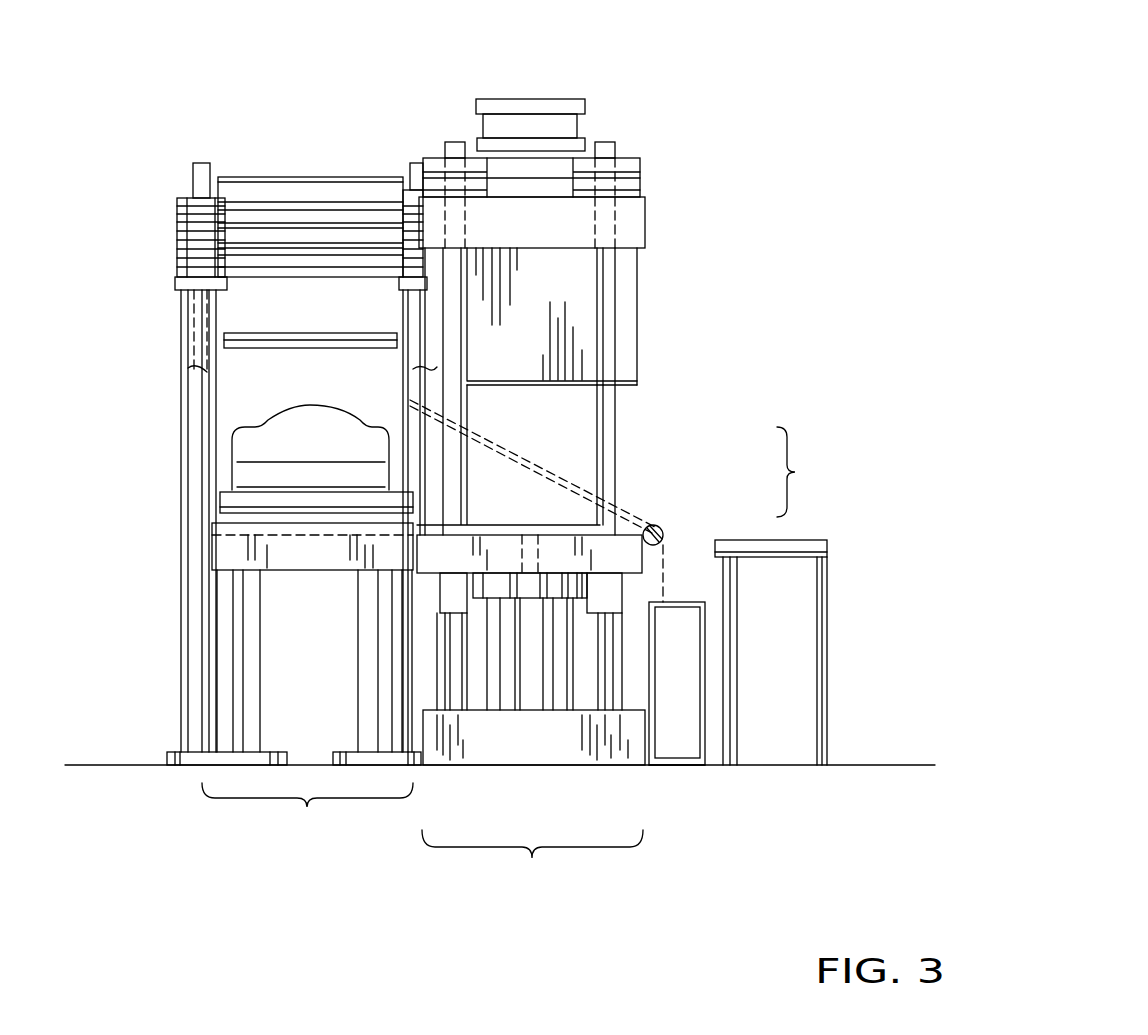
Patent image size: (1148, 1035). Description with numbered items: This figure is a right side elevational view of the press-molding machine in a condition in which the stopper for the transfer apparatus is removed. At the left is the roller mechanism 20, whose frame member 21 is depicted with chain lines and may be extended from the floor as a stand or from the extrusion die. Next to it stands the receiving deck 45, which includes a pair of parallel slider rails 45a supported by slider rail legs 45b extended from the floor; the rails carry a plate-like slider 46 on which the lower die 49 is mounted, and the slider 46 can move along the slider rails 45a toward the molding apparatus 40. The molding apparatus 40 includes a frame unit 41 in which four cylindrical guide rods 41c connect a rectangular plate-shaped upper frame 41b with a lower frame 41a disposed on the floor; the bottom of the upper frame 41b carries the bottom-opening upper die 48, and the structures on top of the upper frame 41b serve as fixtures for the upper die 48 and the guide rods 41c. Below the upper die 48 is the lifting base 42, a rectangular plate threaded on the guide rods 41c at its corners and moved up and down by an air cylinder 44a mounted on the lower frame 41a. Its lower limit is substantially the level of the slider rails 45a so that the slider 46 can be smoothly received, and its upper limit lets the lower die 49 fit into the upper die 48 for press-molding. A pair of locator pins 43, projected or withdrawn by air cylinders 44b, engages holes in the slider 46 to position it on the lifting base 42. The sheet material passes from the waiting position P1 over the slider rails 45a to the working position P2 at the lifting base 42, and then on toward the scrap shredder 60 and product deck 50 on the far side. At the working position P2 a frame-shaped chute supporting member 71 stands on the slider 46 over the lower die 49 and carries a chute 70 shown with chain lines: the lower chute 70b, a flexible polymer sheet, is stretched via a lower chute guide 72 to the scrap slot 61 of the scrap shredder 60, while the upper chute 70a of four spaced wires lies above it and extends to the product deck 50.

The roller mechanism 20 is at (307, 130).
The frame member 21 is at (196, 345).
The molding apparatus 40 is at (664, 173).
The frame unit 41 is at (632, 224).
The lower frame 41a is at (620, 748).
The upper frame 41b is at (528, 391).
The guide rods 41c is at (457, 403).
The lifting base 42 is at (625, 558).
The locator pins 43 is at (516, 530).
The air cylinder 44a is at (507, 682).
The air cylinders 44b is at (525, 690).
The receiving deck 45 is at (194, 627).
The slider rails 45a is at (238, 550).
The slider rail legs 45b is at (378, 648).
The slider 46 is at (240, 505).
The upper die 48 is at (625, 338).
The lower die 49 is at (270, 447).
The product deck 50 is at (780, 538).
The scrap shredder 60 is at (682, 717).
The scrap slot 61 is at (678, 643).
The chute 70 is at (803, 472).
The upper chute 70a is at (630, 500).
The lower chute 70b is at (670, 550).
The chute supporting member 71 is at (412, 410).
The lower chute guide 72 is at (655, 548).
The waiting position P1 is at (307, 819).
The working position P2 is at (532, 867).